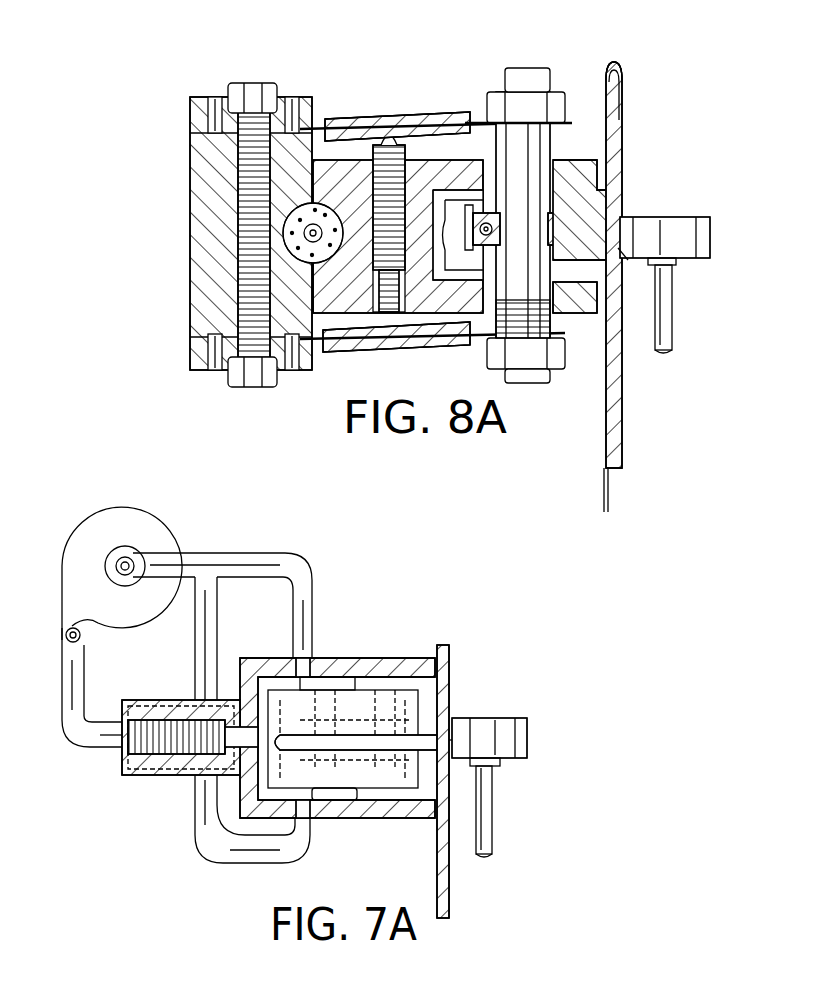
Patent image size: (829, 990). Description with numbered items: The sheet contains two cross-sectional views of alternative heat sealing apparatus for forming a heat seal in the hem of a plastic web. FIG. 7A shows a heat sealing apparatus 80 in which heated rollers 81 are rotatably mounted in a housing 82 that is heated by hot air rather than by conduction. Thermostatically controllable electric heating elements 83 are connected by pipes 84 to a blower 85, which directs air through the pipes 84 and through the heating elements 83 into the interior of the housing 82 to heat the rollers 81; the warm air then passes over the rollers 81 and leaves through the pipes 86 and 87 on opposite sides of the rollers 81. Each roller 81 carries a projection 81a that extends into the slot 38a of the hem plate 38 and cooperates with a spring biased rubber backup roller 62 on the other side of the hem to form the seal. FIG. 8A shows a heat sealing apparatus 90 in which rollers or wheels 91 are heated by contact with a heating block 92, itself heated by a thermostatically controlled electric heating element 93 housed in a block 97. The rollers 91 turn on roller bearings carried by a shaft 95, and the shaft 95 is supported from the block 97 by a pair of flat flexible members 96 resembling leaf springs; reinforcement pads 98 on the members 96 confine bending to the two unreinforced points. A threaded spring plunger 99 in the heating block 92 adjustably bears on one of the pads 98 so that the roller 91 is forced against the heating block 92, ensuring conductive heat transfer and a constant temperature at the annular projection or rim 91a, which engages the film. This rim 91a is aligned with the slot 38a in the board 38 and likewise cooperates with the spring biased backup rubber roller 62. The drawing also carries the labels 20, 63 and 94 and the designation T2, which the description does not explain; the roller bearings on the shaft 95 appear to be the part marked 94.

In FIG. 8A, the strip base 20 is at (610, 483).
In FIG. 8A, the hem plate 38 is at (622, 399).
In FIG. 7A, the hem plate 38 is at (449, 878).
In FIG. 8A, the slot 38a is at (630, 258).
In FIG. 7A, the slot 38a is at (452, 728).
In FIG. 8A, the spring biased rubber backup roller 62 is at (710, 248).
In FIG. 7A, the spring biased rubber backup roller 62 is at (530, 728).
In FIG. 8A, the pin 63 is at (668, 323).
In FIG. 7A, the pin 63 is at (490, 830).
In FIG. 7A, the heat sealing apparatus 80 is at (396, 617).
In FIG. 7A, the heated roller 81 is at (415, 790).
In FIG. 7A, the projection 81a is at (445, 760).
In FIG. 7A, the housing 82 is at (348, 818).
In FIG. 7A, the heating element 83 is at (161, 779).
In FIG. 7A, the pipe 84 is at (85, 676).
In FIG. 7A, the blower 85 is at (110, 520).
In FIG. 7A, the pipe 86 is at (255, 550).
In FIG. 7A, the pipe 87 is at (240, 862).
In FIG. 8A, the heat sealing apparatus 90 is at (448, 79).
In FIG. 8A, the roller 91 is at (590, 178).
In FIG. 8A, the annular projection 91a is at (620, 229).
In FIG. 8A, the heating block 92 is at (452, 176).
In FIG. 8A, the heating element 93 is at (346, 222).
In FIG. 8A, the block 94 is at (575, 307).
In FIG. 8A, the shaft 95 is at (522, 368).
In FIG. 8A, the flat flexible member 96 is at (472, 118).
In FIG. 8A, the block 97 is at (192, 232).
In FIG. 8A, the reinforcement pad 98 is at (418, 113).
In FIG. 8A, the threaded spring plunger 99 is at (381, 144).
In FIG. 8A, the tape T2 is at (625, 95).